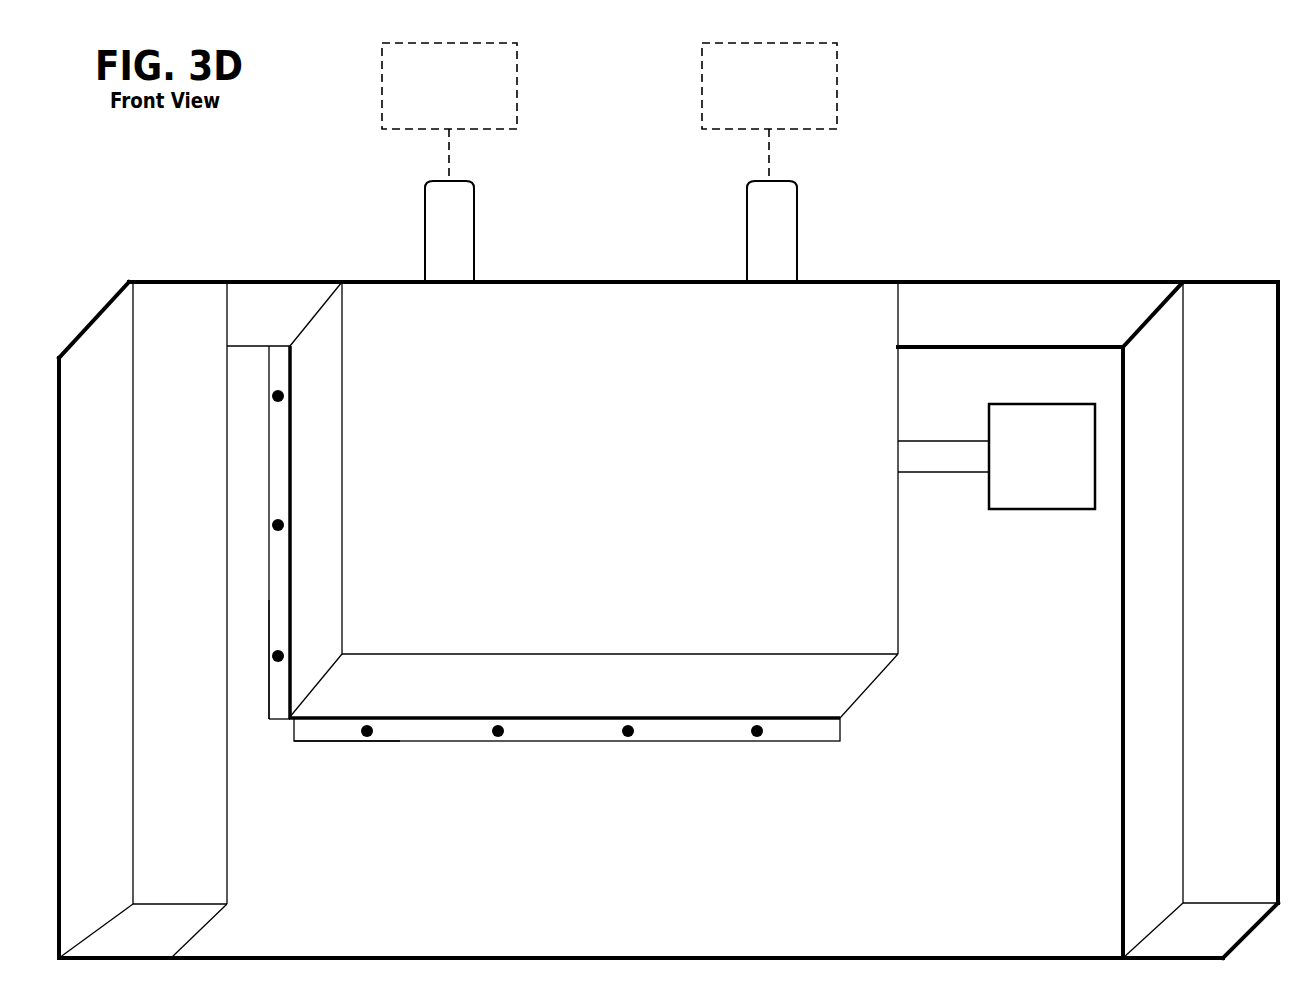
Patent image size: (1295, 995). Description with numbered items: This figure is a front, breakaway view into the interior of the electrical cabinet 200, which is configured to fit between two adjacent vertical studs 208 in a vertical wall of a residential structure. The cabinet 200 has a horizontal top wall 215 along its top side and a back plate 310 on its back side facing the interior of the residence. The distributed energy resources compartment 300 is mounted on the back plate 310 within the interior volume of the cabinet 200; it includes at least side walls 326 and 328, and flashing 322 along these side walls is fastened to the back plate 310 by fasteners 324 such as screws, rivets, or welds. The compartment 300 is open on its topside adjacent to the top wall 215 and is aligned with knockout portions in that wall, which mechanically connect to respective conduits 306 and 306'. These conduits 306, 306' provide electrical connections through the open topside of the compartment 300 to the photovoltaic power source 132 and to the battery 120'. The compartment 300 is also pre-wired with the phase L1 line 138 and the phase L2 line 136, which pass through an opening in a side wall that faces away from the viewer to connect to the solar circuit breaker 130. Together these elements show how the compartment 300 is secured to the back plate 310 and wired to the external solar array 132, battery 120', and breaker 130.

The electrical cabinet 200 is at (278, 223).
The vertical studs 208 is at (668, 620).
The back plate 310 is at (1040, 620).
The distributed energy resources compartment 300 is at (872, 332).
The horizontal top wall 215 is at (1068, 280).
The side wall 326 is at (309, 428).
The side wall 328 is at (832, 679).
The flashing 322 is at (268, 700).
The flashing 324 is at (505, 742).
The conduit 306 is at (425, 231).
The conduit 306' is at (752, 231).
The photovoltaic power source 132 is at (449, 110).
The battery 120' is at (769, 110).
The solar circuit breaker 130 is at (1042, 456).
The phase L1 line 138 is at (978, 440).
The phase L2 line 136 is at (967, 473).